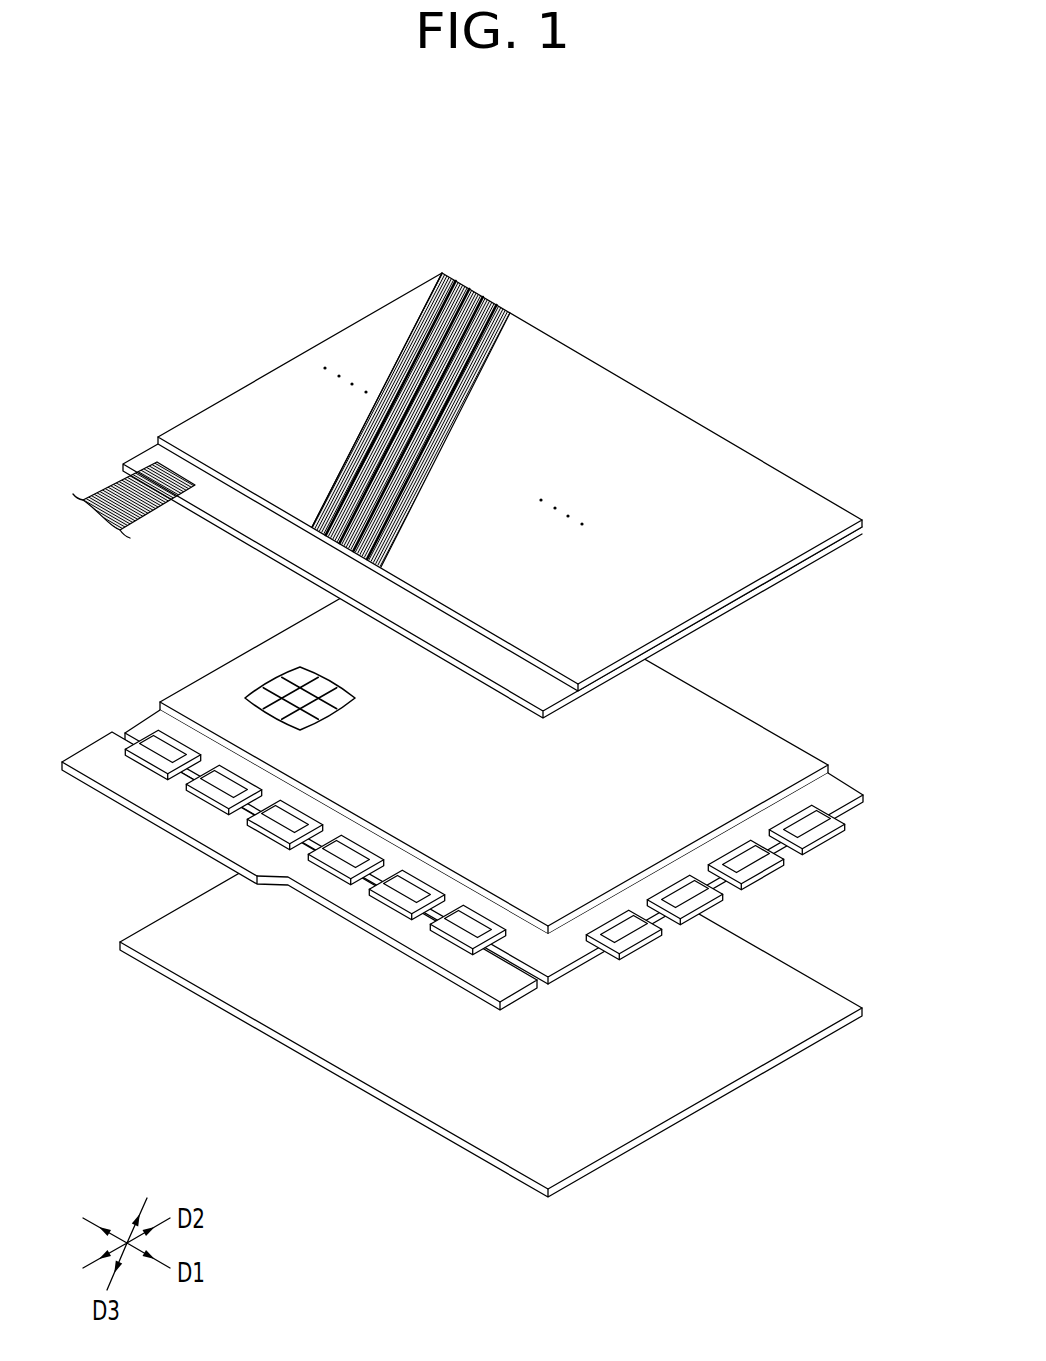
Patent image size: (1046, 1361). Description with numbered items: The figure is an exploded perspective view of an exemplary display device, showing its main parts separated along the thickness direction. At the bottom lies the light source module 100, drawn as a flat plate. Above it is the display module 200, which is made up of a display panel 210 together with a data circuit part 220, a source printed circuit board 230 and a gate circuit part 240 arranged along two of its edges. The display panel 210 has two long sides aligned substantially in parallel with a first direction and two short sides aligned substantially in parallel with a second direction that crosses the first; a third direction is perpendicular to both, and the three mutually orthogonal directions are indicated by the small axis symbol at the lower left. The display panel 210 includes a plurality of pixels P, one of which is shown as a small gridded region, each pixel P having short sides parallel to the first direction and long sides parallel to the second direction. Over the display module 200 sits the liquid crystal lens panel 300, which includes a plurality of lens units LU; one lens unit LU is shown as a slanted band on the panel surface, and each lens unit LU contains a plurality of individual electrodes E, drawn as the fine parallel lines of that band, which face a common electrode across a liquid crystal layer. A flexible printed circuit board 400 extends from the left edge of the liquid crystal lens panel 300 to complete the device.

The light source module 100 is at (690, 1107).
The display module 200 is at (462, 891).
The display panel 210 is at (590, 957).
The data circuit part 220 is at (507, 930).
The source printed circuit board 230 is at (507, 985).
The gate circuit part 240 is at (715, 890).
The liquid crystal lens panel 300 is at (492, 474).
The flexible printed circuit board 400 is at (114, 492).
The pixel P is at (287, 693).
The individual electrode E is at (431, 298).
The lens unit LU is at (518, 305).